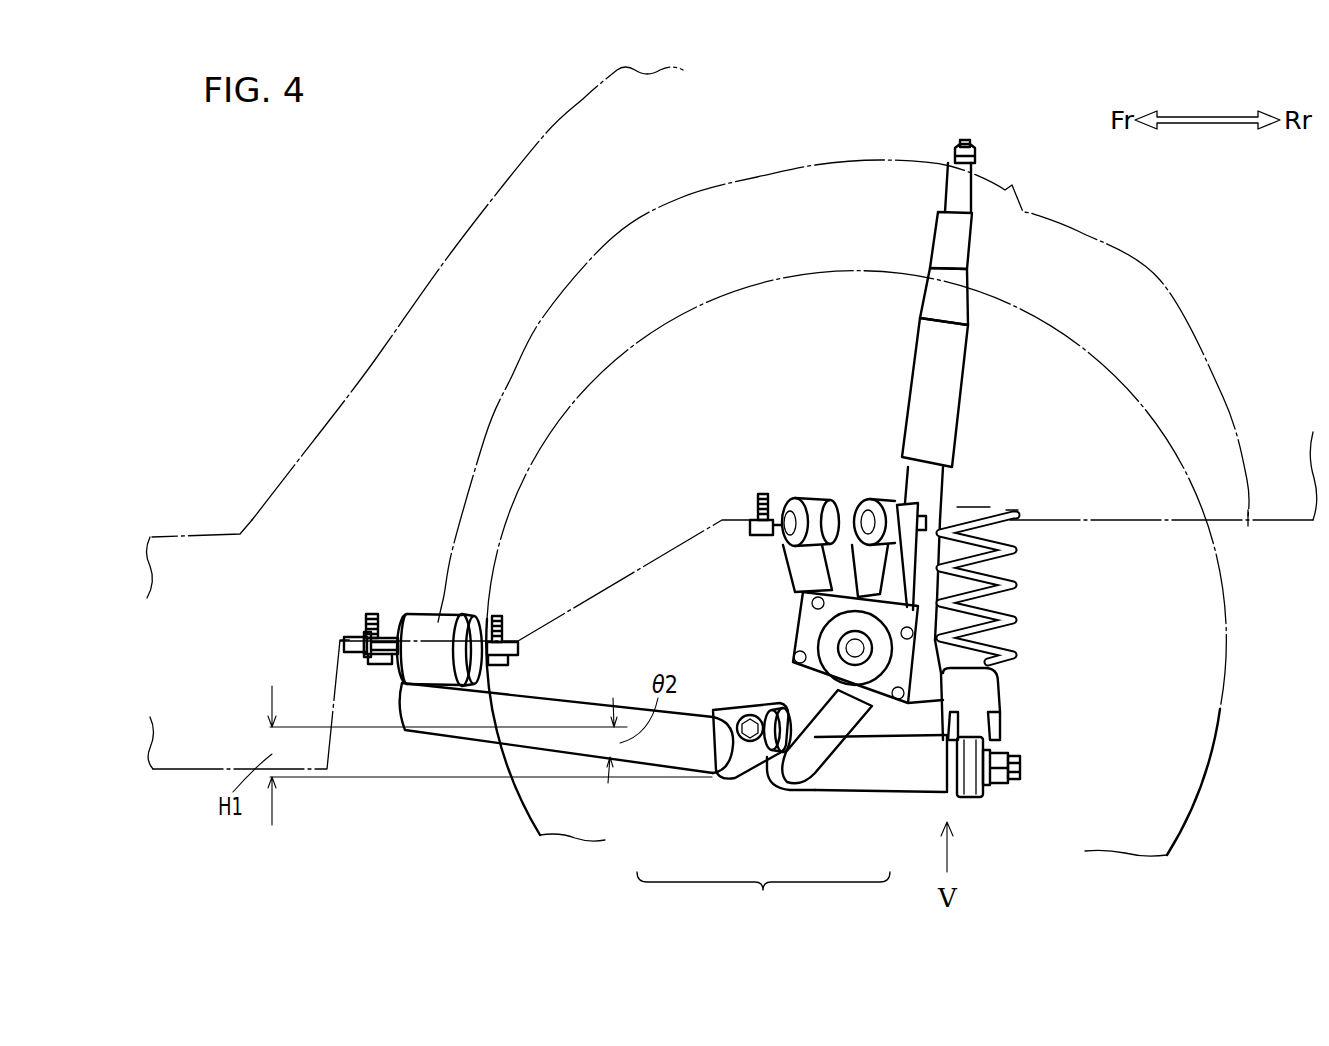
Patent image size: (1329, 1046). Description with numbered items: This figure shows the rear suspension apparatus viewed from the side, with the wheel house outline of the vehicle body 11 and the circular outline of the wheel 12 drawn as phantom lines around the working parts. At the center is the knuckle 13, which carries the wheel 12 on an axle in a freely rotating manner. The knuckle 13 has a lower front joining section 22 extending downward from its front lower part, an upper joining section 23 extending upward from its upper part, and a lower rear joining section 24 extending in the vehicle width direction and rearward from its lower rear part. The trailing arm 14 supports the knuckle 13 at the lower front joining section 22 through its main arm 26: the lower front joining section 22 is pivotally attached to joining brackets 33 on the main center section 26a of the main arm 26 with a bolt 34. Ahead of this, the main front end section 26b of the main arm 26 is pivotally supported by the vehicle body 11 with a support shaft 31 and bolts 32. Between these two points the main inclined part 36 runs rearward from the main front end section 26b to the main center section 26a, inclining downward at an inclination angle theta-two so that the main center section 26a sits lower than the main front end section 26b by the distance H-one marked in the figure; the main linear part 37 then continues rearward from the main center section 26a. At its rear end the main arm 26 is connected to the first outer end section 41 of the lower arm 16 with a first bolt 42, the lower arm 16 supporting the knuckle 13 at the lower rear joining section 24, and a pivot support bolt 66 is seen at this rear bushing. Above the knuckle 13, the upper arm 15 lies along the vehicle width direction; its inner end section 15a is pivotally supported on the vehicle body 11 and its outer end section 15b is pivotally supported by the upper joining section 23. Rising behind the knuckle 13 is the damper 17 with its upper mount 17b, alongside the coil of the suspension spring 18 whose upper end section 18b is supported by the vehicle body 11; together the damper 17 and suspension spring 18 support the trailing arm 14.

The vehicle body 11 is at (563, 140).
The wheel 12 is at (597, 382).
The knuckle 13 is at (944, 622).
The trailing arm 14 is at (559, 765).
The upper arm 15 is at (812, 513).
The inner end section 15a is at (803, 502).
The outer end section 15b is at (870, 503).
The lower arm 16 is at (1038, 806).
The damper 17 is at (998, 390).
The shock absorber upper mount 17b is at (963, 178).
The suspension spring 18 is at (1035, 556).
The upper end section 18b is at (957, 507).
The lower front joining section 22 is at (820, 713).
The upper joining section 23 is at (1017, 512).
The lower rear joining section 24 is at (983, 697).
The main arm 26 is at (602, 731).
The main center section 26a is at (763, 772).
The main front end section 26b is at (428, 625).
The support shaft 31 is at (350, 634).
The bolts 32 is at (369, 613).
The joining brackets 33 is at (725, 716).
The bolt 34 is at (745, 718).
The main inclined part 36 is at (663, 757).
The main linear part 37 is at (885, 780).
The first outer end section 41 is at (970, 790).
The first bolt 42 is at (1017, 777).
The pivot support bolt 66 is at (1023, 767).